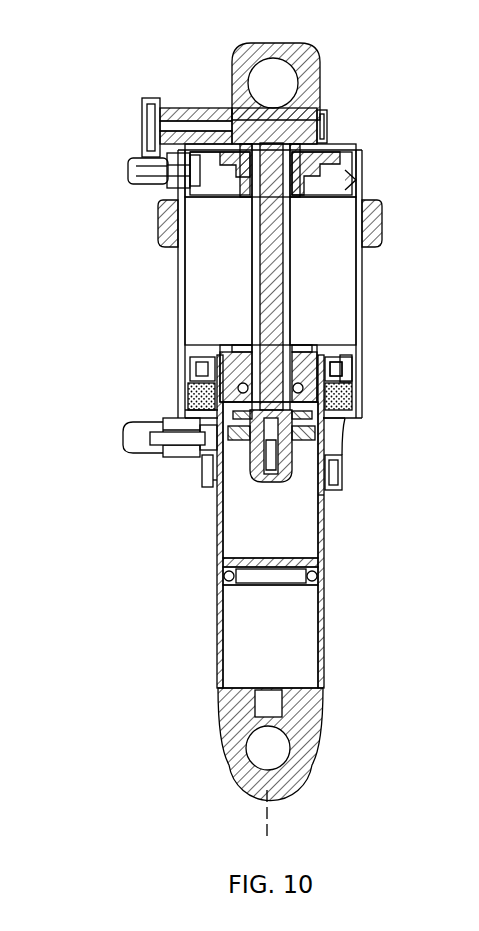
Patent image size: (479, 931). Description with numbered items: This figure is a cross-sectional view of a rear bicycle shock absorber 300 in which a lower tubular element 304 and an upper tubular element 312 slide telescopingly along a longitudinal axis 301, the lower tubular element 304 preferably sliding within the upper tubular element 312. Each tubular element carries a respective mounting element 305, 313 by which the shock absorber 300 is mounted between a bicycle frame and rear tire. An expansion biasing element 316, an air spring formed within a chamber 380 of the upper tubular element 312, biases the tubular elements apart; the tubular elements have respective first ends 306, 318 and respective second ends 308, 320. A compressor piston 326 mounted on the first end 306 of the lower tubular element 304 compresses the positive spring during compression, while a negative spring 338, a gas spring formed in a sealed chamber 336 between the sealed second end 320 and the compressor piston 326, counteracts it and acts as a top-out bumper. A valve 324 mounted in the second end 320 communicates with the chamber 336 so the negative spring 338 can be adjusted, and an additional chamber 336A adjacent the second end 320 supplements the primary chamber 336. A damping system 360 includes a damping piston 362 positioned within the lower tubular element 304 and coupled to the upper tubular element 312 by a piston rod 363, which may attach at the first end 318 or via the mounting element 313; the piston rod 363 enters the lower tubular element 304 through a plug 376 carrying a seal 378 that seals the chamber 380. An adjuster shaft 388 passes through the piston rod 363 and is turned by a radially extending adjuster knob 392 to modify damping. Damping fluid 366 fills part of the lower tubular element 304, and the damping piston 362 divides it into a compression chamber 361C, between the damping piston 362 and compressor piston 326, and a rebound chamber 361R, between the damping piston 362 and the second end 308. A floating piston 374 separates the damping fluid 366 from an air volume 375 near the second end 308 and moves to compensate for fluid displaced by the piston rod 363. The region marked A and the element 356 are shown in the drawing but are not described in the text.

The rear shock absorber 300 is at (333, 82).
The mounting element 313 is at (236, 56).
The adjuster knob 392 is at (142, 118).
The fitting 356 is at (128, 178).
The detail region A is at (358, 177).
The upper tubular element 312 is at (364, 310).
The expansion biasing element 316 is at (362, 240).
The first end of upper tubular element 318 is at (178, 295).
The chamber 380 is at (212, 250).
The piston rod 363 is at (295, 295).
The adjuster shaft 388 is at (285, 248).
The plug 376 is at (258, 352).
The seal 378 is at (244, 348).
The sealed chamber 336 is at (188, 396).
The second end of upper tubular element 320 is at (185, 404).
The compressor piston 326 is at (358, 358).
The negative spring 338 is at (352, 375).
The lower tubular element 304 is at (326, 523).
The damping piston 362 is at (320, 418).
The compression chamber 361C is at (330, 415).
The first end of lower tubular element 306 is at (342, 460).
The rebound chamber 361R is at (322, 500).
The valve 324 is at (123, 437).
The damping system 360 is at (195, 470).
The additional chamber 336A is at (208, 490).
The damping fluid 366 is at (275, 545).
The floating piston 374 is at (300, 578).
The air volume 375 is at (300, 660).
The second end of lower tubular element 308 is at (218, 695).
The mounting element 305 is at (225, 745).
The longitudinal axis 301 is at (267, 810).